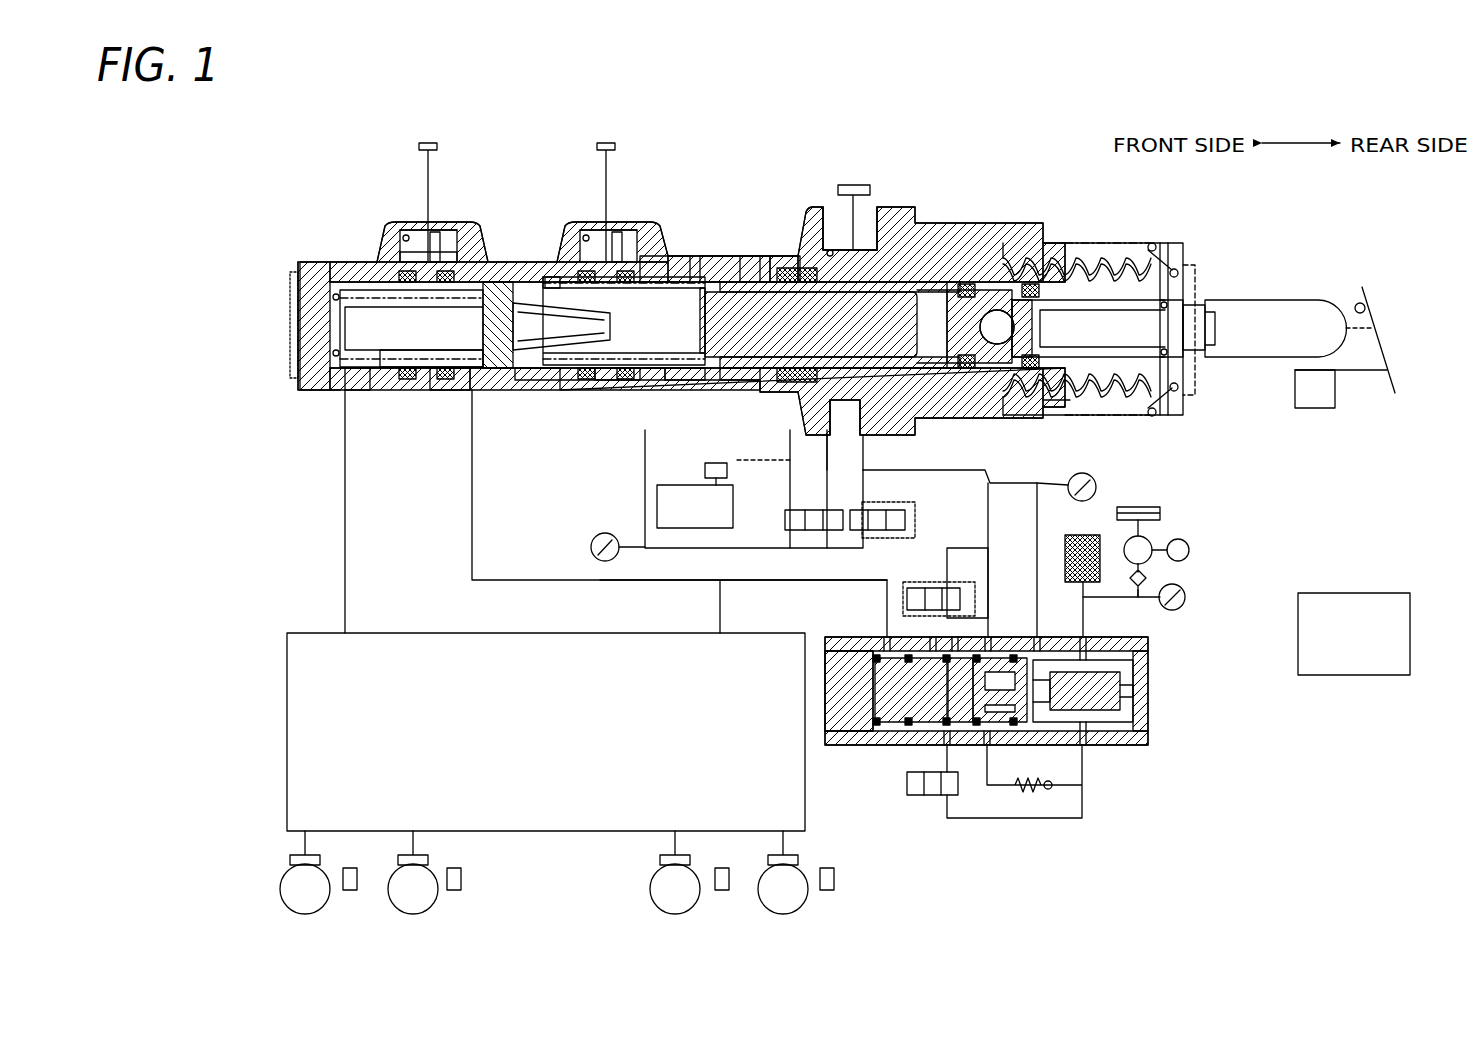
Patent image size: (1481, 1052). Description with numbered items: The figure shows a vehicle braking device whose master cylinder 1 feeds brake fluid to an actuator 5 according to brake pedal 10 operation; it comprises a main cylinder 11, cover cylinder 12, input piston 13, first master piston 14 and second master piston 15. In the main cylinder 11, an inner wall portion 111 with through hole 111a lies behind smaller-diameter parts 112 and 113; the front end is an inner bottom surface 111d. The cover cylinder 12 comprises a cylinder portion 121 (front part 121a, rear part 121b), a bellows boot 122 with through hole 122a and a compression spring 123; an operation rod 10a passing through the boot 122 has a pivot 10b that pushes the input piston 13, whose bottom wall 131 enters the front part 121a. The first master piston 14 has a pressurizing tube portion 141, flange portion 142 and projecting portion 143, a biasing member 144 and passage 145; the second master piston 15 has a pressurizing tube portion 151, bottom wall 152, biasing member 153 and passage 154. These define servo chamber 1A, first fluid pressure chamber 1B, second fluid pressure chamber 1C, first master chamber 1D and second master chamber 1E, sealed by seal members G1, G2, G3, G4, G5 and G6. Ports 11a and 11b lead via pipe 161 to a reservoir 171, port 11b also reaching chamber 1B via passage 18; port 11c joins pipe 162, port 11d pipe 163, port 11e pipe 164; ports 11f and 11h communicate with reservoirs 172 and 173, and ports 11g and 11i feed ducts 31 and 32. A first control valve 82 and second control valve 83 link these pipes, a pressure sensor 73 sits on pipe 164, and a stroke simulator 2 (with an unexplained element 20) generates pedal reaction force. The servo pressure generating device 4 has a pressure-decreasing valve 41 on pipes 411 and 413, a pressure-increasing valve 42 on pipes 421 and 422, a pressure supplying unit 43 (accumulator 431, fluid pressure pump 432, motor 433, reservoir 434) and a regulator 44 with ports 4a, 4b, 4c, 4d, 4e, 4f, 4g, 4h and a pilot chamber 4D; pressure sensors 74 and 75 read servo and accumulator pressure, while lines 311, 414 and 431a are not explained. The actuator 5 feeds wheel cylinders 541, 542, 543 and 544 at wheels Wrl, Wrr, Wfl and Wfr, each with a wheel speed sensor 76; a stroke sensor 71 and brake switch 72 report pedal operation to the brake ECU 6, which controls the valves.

The master cylinder 1 is at (292, 276).
The brake pedal 10 is at (1368, 300).
The operation rod 10a is at (1160, 308).
The pivot 10b is at (1132, 298).
The main cylinder 11 is at (322, 262).
The inner wall portion 111 is at (784, 256).
The through hole 111a is at (748, 256).
The inner bottom surface 111d is at (290, 352).
The smaller-diameter part 112 is at (615, 382).
The smaller-diameter part 113 is at (450, 392).
The port 11a is at (845, 432).
The port 11b is at (850, 235).
The port 11c is at (830, 412).
The port 11d is at (790, 385).
The port 11e is at (652, 382).
The port 11f is at (612, 232).
The port 11g is at (465, 392).
The port 11h is at (438, 232).
The port 11i is at (320, 392).
The cover cylinder 12 is at (1185, 420).
The cylinder portion 121 is at (1122, 440).
The front part 121a is at (1030, 418).
The rear part 121b is at (1058, 405).
The boot 122 is at (1170, 416).
The through hole 122a is at (1210, 282).
The compression spring 123 is at (1185, 396).
The input piston 13 is at (1090, 262).
The bottom wall 131 is at (1035, 300).
The first master piston 14 is at (660, 370).
The pressurizing tube portion 141 is at (655, 256).
The flange portion 142 is at (740, 268).
The projecting portion 143 is at (880, 300).
The biasing member 144 is at (512, 285).
The passage 145 is at (552, 278).
The second master piston 15 is at (535, 305).
The pressurizing tube portion 151 is at (415, 372).
The bottom wall 152 is at (500, 372).
The biasing member 153 is at (358, 292).
The passage 154 is at (416, 250).
The pipe 161 is at (905, 470).
The pipe 162 is at (803, 489).
The pipe 163 is at (778, 452).
The pipe 164 is at (680, 549).
The reservoir 171 is at (849, 204).
The reservoir 172 is at (605, 188).
The reservoir 173 is at (427, 188).
The passage 18 is at (998, 312).
The servo chamber 1A is at (738, 374).
The first fluid pressure chamber 1B is at (935, 362).
The second fluid pressure chamber 1C is at (685, 382).
The first master chamber 1D is at (530, 382).
The second master chamber 1E is at (362, 392).
The stroke simulator 2 is at (734, 520).
The stroke simulator 20 is at (705, 470).
The duct 31 is at (470, 530).
The pipe 311 is at (810, 560).
The duct 32 is at (344, 535).
The servo pressure generating device 4 is at (1245, 508).
The pressure-decreasing valve 41 is at (905, 595).
The pipe 411 is at (960, 548).
The pipe 413 is at (930, 636).
The pipe 414 is at (1000, 566).
The pressure-increasing valve 42 is at (906, 790).
The pipe 421 is at (935, 772).
The pipe 422 is at (985, 820).
The pressure supplying unit 43 is at (1218, 548).
The accumulator 431 is at (1082, 598).
The accumulator pipe 431a is at (1100, 598).
The fluid pressure pump 432 is at (1080, 530).
The motor 433 is at (1150, 545).
The reservoir 434 is at (1160, 513).
The regulator 44 is at (1150, 730).
The port 4a is at (1108, 622).
The port 4b is at (1085, 745).
The port 4c is at (1052, 624).
The port 4d is at (1000, 624).
The port 4e is at (988, 745).
The port 4f is at (960, 622).
The port 4g is at (948, 745).
The port 4h is at (882, 636).
The pilot chamber 4D is at (868, 746).
The actuator 5 is at (320, 630).
The wheel cylinder 541 is at (309, 846).
The wheel cylinder 542 is at (417, 846).
The wheel cylinder 543 is at (679, 846).
The wheel cylinder 544 is at (787, 846).
The brake ECU 6 is at (1330, 592).
The stroke sensor 71 is at (1312, 410).
The brake switch 72 is at (1356, 304).
The pressure sensor 73 is at (596, 536).
The pressure sensor 74 is at (1070, 496).
The pressure sensor 75 is at (1180, 608).
The wheel speed sensor 76 is at (357, 888).
The first control valve 82 is at (790, 512).
The second control valve 83 is at (860, 512).
The seal member G1 is at (624, 270).
The seal member G2 is at (584, 270).
The seal member G3 is at (447, 270).
The seal member G4 is at (404, 270).
The seal member G5 is at (968, 283).
The seal member G6 is at (1032, 283).
The wheel rear left Wrl is at (310, 912).
The wheel rear right Wrr is at (418, 912).
The wheel front left Wfl is at (680, 912).
The wheel front right Wfr is at (788, 912).